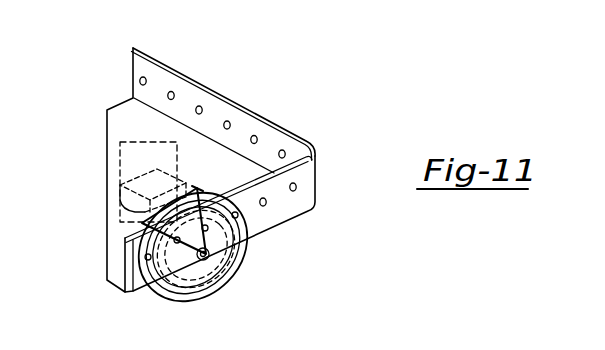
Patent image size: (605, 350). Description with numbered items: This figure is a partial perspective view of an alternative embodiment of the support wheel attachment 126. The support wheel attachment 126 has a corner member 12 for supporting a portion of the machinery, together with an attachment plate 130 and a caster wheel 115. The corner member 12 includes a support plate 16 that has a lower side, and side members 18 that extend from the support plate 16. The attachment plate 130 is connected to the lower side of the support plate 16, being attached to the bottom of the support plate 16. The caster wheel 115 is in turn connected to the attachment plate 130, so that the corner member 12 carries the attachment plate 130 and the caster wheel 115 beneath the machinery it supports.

The corner member 12 is at (224, 82).
The support plate 16 is at (131, 110).
The side members 18 is at (183, 84).
The caster wheel 115 is at (207, 290).
The support wheel attachment 126 is at (250, 257).
The attachment plate 130 is at (136, 162).